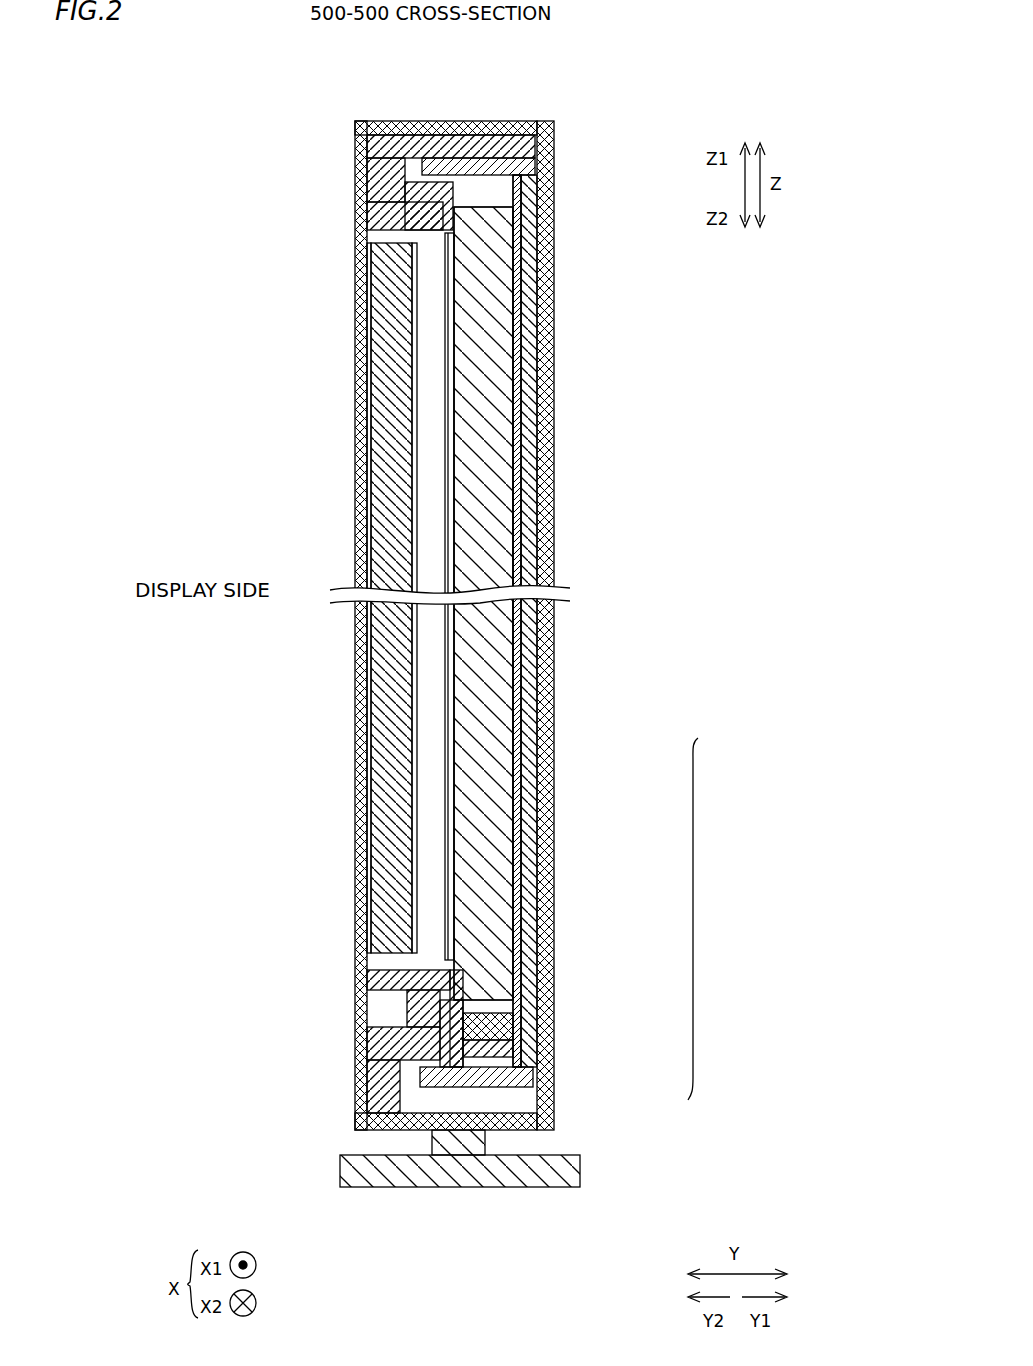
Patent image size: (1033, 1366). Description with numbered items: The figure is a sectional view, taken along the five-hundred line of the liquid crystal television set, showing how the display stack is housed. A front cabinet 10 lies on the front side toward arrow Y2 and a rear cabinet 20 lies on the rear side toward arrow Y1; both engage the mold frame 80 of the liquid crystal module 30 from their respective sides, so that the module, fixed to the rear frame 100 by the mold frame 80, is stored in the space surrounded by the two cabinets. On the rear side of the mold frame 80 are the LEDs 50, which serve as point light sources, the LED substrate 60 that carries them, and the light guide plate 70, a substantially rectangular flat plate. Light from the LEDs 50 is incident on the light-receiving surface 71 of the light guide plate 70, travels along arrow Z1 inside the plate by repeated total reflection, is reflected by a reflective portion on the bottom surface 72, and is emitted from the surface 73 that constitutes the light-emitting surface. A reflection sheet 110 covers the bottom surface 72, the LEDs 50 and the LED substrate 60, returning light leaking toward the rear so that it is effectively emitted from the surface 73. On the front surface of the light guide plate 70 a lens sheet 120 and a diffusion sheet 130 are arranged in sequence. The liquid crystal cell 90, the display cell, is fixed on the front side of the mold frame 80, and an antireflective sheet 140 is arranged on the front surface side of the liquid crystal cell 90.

The front cabinet 10 is at (355, 124).
The rear cabinet 20 is at (553, 520).
The liquid crystal module 30 is at (717, 919).
The LEDs 50 is at (553, 1024).
The LED substrate 60 is at (553, 1043).
The light guide plate 70 is at (488, 837).
The light-receiving surface 71 is at (470, 1012).
The bottom surface 72 is at (510, 902).
The surface constituting a light-emitting surface 73 is at (528, 212).
The mold frame 80 is at (355, 173).
The liquid crystal cell 90 is at (455, 862).
The rear frame 100 is at (553, 780).
The reflection sheet 110 is at (553, 725).
The lens sheet 120 is at (445, 443).
The diffusion sheet 130 is at (448, 468).
The antireflective sheet 140 is at (363, 545).